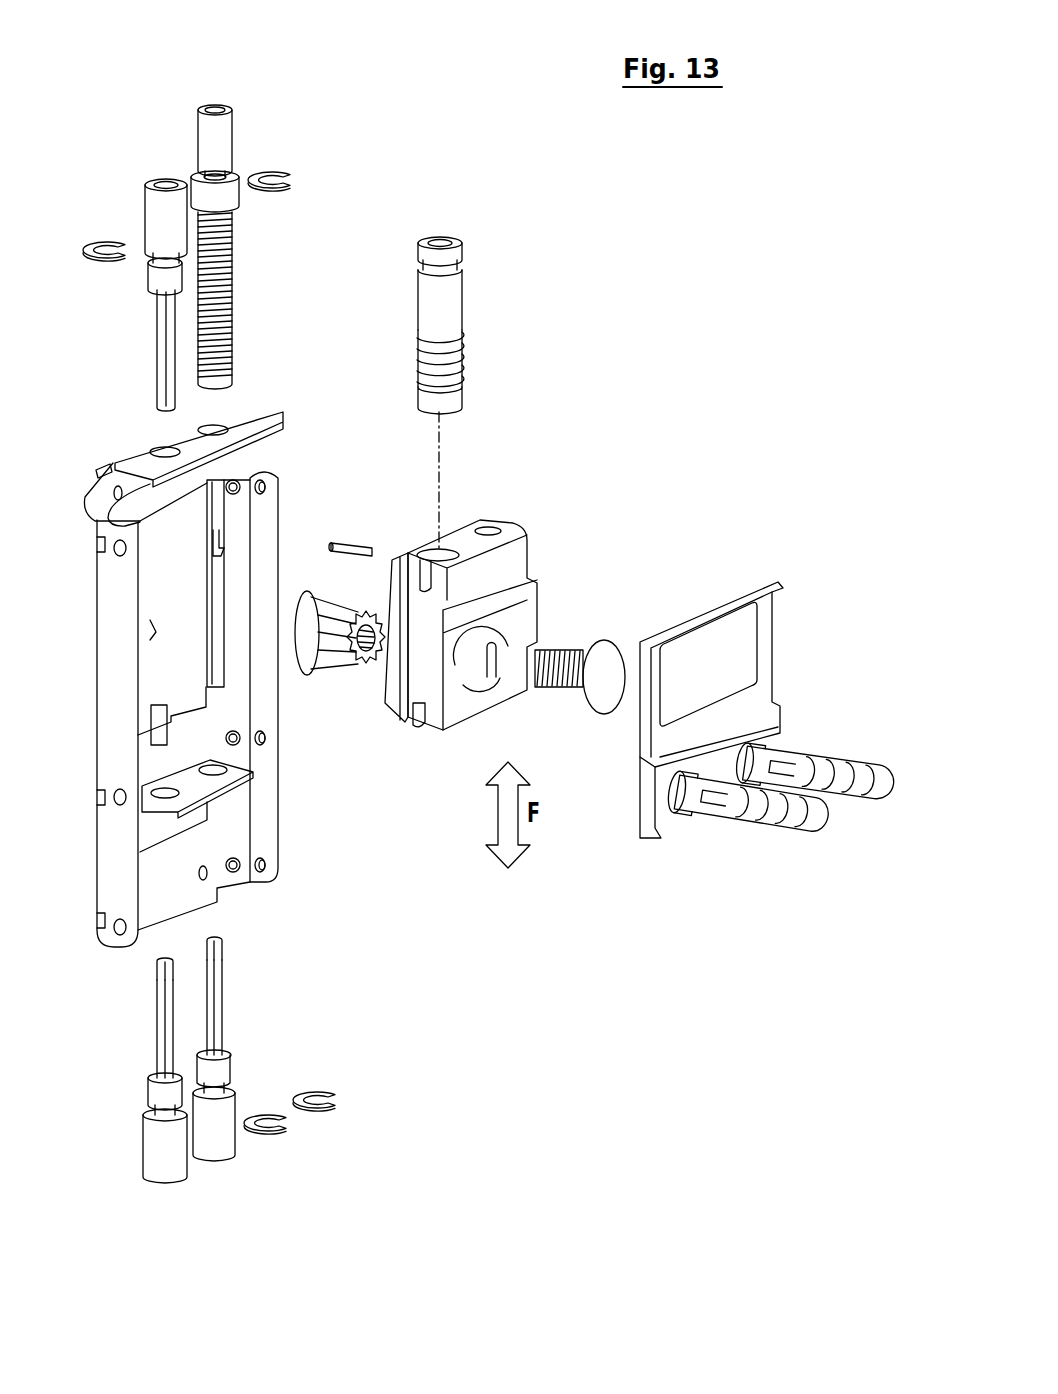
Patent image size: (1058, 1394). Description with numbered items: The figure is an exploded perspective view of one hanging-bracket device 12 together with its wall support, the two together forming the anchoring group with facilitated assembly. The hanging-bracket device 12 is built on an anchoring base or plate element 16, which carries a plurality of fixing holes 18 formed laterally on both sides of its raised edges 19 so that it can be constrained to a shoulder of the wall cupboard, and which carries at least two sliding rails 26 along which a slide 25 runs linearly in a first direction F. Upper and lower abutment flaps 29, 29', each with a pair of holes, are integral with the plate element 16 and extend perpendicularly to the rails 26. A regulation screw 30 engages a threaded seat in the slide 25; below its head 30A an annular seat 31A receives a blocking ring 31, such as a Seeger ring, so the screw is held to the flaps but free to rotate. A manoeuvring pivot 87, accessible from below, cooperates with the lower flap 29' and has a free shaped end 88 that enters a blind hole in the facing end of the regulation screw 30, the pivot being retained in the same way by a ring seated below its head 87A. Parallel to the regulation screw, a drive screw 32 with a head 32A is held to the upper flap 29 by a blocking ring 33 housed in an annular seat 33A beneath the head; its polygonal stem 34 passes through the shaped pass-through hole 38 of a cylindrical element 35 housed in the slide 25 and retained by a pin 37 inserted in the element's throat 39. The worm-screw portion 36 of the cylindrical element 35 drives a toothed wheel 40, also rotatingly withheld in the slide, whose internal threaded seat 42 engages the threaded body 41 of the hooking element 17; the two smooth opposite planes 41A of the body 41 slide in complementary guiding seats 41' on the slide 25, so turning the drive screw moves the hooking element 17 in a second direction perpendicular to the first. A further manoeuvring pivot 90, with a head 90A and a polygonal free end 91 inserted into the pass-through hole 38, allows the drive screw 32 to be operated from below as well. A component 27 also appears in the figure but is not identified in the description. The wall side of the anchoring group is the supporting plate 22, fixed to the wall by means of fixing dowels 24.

The hanging-bracket device 12 is at (623, 240).
The anchoring base or plate element 16 is at (180, 892).
The hooking element 17 is at (616, 688).
The fixing holes 18 is at (275, 486).
The raised edges 19 is at (130, 647).
The supporting plate 22 is at (750, 592).
The fixing dowels 24 is at (858, 787).
The slide 25 is at (473, 714).
The sliding rails 26 is at (223, 550).
The slide block 27 is at (495, 523).
The upper abutment flap 29 is at (211, 371).
The lower abutment flap 29' is at (290, 828).
The regulation screw 30 is at (241, 198).
The head of the regulation screw 30A is at (200, 130).
The blocking ring 31 is at (292, 180).
The annular seat 31A is at (237, 172).
The drive screw 32 is at (170, 183).
The head of the drive screw 32A is at (150, 206).
The blocking ring 33 is at (118, 245).
The annular seat 33A is at (150, 258).
The polygonal stem 34 is at (160, 323).
The cylindrical element 35 is at (462, 283).
The worm-screw portion 36 is at (450, 365).
The pin 37 is at (348, 545).
The shaped pass-through hole 38 is at (443, 243).
The throat 39 is at (415, 262).
The toothed wheel 40 is at (344, 672).
The threaded body 41 is at (605, 616).
The smooth opposite planes 41A is at (570, 651).
The guiding seats 41' is at (460, 657).
The threaded seat 42 is at (393, 640).
The manoeuvring pivot 87 is at (215, 1027).
The head of the manoeuvring pivot 87A is at (223, 1145).
The free shaped end 88 is at (217, 930).
The further manoeuvring pivot 90 is at (160, 1027).
The head of the further manoeuvring pivot 90A is at (173, 1172).
The shaped free end 91 is at (162, 947).